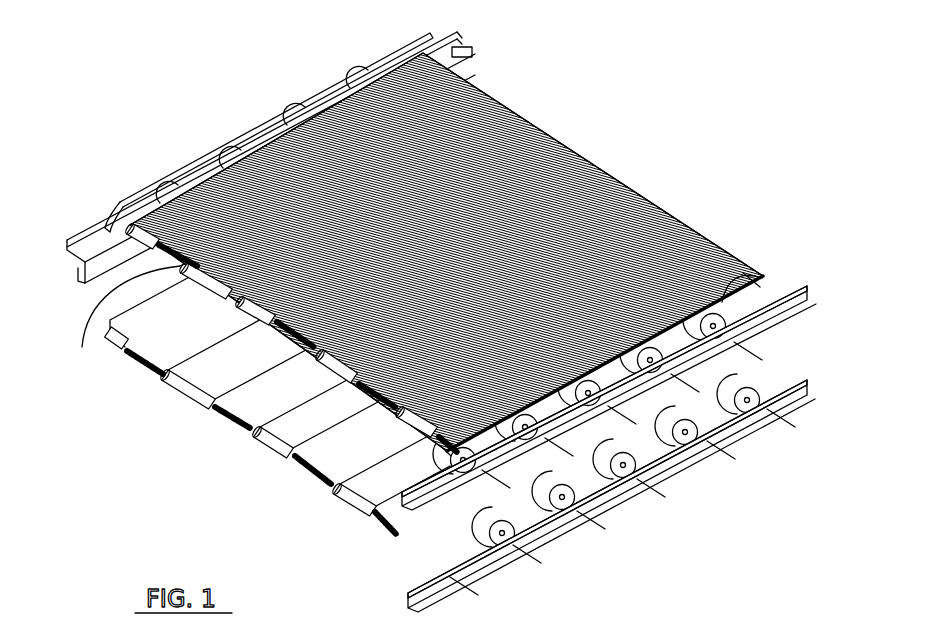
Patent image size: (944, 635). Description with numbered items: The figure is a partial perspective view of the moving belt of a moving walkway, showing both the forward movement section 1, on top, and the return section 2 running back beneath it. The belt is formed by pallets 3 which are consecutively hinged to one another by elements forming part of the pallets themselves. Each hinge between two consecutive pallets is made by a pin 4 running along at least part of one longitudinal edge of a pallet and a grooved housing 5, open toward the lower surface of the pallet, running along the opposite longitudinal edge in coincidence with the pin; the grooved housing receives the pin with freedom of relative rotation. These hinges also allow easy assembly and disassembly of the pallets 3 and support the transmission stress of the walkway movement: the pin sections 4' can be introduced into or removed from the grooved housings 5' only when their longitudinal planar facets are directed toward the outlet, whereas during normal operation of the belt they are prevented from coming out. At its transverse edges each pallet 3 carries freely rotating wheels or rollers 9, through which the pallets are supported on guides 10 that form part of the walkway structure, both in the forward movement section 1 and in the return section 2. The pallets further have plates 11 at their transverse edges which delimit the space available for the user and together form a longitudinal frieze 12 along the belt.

The forward movement section 1 is at (618, 128).
The return section 2 is at (258, 460).
The pallets 3 is at (257, 197).
The pin 4 is at (238, 418).
The pin sections 4' is at (101, 344).
The grooved housing 5 is at (290, 389).
The grooved housings 5' is at (235, 471).
The rollers 9 is at (497, 540).
The guides 10 is at (86, 253).
The plates 11 is at (157, 200).
The longitudinal frieze 12 is at (255, 116).